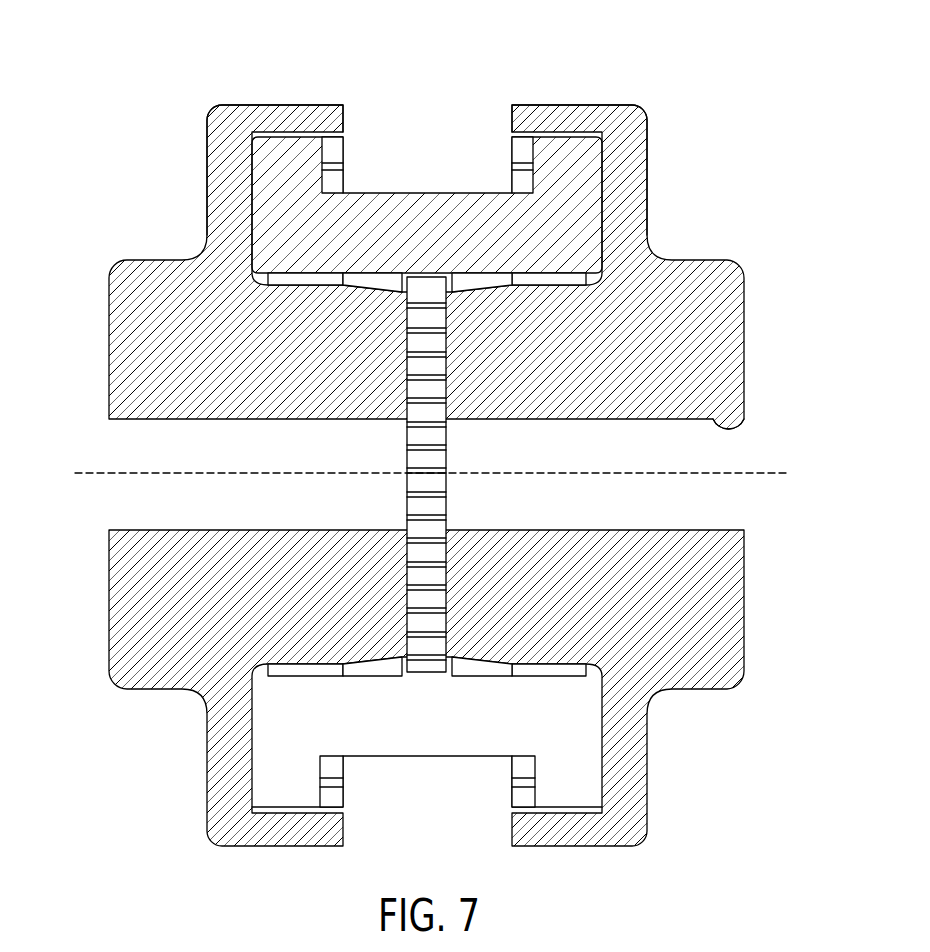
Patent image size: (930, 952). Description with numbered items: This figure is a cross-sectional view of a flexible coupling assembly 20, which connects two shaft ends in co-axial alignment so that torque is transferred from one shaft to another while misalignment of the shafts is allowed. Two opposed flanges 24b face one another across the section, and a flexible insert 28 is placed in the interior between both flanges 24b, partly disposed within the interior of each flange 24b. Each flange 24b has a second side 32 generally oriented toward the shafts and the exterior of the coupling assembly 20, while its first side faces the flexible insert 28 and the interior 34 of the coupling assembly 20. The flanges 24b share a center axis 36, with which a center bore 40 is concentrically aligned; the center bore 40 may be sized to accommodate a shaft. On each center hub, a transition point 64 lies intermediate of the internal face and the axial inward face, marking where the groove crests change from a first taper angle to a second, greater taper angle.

The coupling assembly 20 is at (428, 426).
The flange 24b is at (267, 105).
The flexible insert 28 is at (433, 222).
The second side 32 is at (108, 318).
The interior of the coupling assembly 34 is at (410, 537).
The center axis 36 is at (77, 476).
The center bore 40 is at (744, 420).
The transition point 64 is at (343, 287).